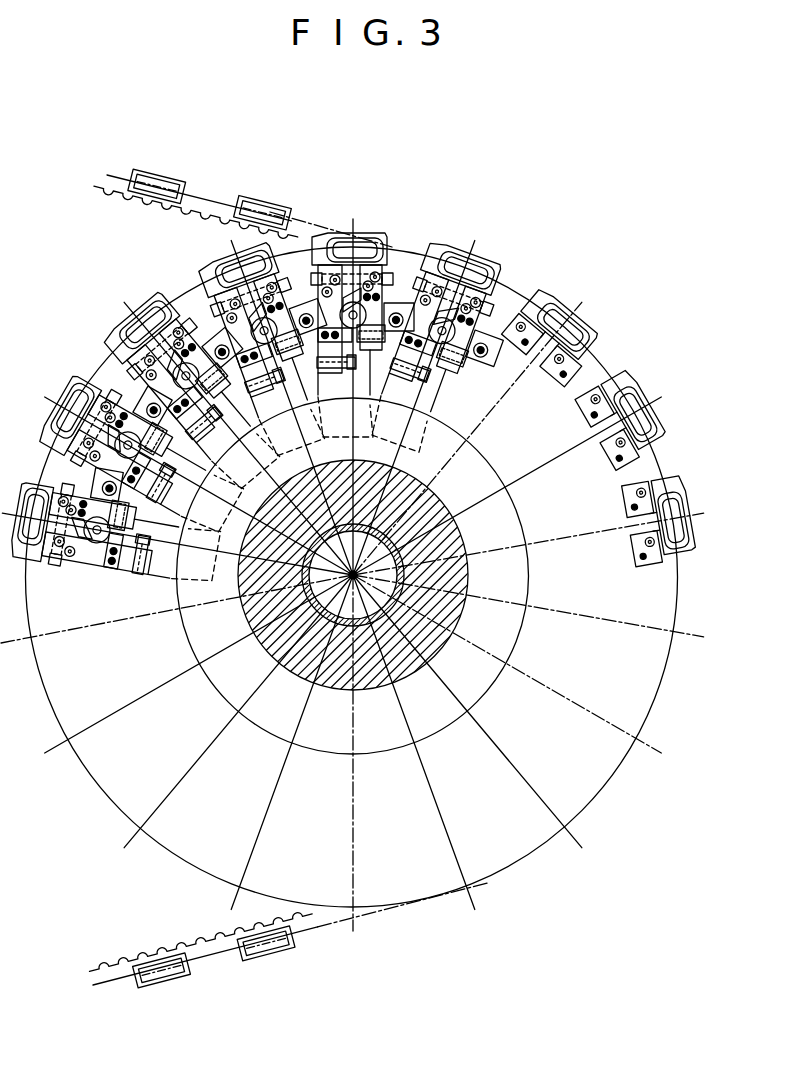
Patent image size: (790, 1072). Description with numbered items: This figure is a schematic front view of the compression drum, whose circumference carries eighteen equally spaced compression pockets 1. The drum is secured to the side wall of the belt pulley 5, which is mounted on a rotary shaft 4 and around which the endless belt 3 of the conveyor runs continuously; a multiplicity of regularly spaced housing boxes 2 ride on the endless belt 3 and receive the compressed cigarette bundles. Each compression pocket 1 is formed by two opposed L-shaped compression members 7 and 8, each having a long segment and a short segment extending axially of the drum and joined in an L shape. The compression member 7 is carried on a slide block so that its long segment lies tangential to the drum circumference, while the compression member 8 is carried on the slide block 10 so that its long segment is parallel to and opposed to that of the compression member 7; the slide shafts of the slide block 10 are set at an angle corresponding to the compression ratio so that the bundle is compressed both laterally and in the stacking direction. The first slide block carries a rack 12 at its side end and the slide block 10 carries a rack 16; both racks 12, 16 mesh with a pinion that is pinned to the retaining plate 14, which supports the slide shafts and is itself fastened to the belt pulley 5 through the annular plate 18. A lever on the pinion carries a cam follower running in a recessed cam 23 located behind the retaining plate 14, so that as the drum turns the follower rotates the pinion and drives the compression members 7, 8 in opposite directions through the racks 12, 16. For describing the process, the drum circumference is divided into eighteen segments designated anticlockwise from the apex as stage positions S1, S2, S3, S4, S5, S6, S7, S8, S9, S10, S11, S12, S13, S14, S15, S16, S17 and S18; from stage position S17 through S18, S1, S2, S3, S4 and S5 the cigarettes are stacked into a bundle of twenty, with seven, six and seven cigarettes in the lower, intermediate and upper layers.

The compression pocket 1 is at (380, 232).
The housing box 2 is at (281, 212).
The endless belt 3 is at (197, 195).
The rotary shaft 4 is at (466, 578).
The belt pulley 5 is at (456, 553).
The L-shaped compression member 7 is at (332, 242).
The L-shaped compression member 8 is at (383, 247).
The slide block 10 is at (410, 254).
The rack 12 is at (420, 453).
The retaining plate 14 is at (432, 380).
The rack 16 is at (493, 278).
The annular plate 18 is at (480, 468).
The recessed cam 23 is at (603, 419).
The stage position S1 is at (351, 473).
The stage position S2 is at (321, 502).
The stage position S3 is at (282, 505).
The stage position S4 is at (281, 535).
The stage position S5 is at (261, 555).
The stage position S6 is at (282, 594).
The stage position S7 is at (276, 632).
The stage position S8 is at (304, 642).
The stage position S9 is at (324, 672).
The stage position S10 is at (361, 655).
The stage position S11 is at (389, 672).
The stage position S12 is at (406, 639).
The stage position S13 is at (434, 617).
The stage position S14 is at (436, 594).
The stage position S15 is at (444, 565).
The stage position S16 is at (428, 540).
The stage position S17 is at (414, 509).
The stage position S18 is at (383, 492).